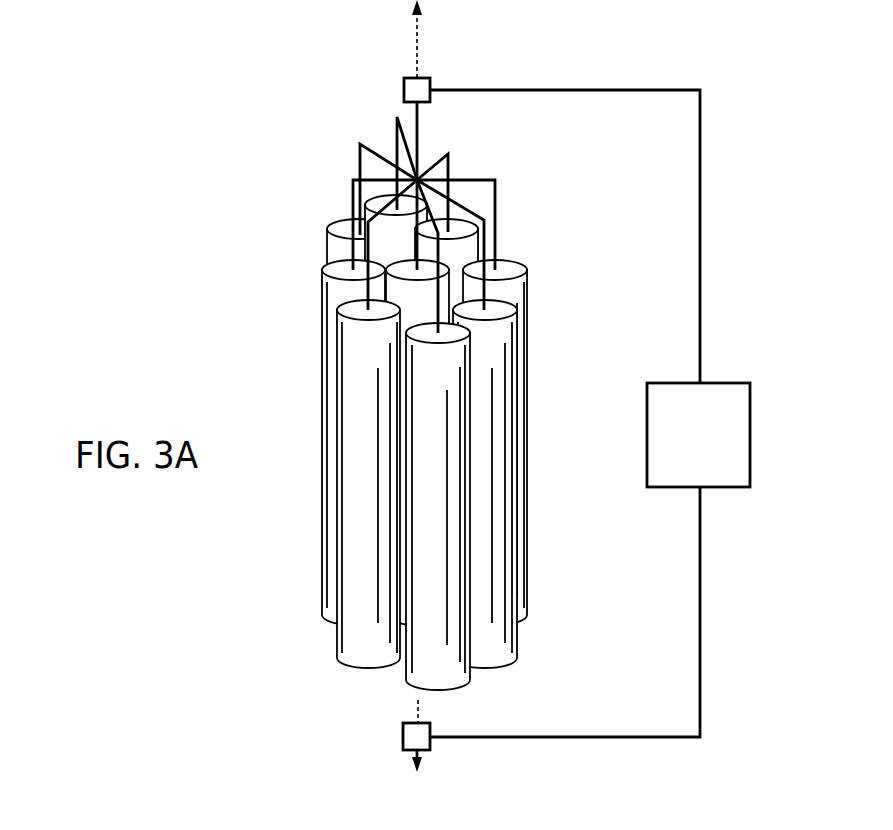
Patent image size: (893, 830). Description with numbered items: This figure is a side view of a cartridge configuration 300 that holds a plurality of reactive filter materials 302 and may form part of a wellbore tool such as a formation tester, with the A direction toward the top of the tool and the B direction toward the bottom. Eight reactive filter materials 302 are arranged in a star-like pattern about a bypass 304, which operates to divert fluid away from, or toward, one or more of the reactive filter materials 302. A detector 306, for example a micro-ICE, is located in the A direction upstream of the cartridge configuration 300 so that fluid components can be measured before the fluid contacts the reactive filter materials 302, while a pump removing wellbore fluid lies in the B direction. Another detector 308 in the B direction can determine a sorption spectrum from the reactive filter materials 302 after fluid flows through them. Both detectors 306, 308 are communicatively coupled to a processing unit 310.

The cartridge configuration 300 is at (511, 386).
The reactive filter material 302 is at (507, 291).
The bypass 304 is at (347, 283).
The detector 306 is at (420, 78).
The detector 308 is at (422, 722).
The processing unit 310 is at (730, 383).